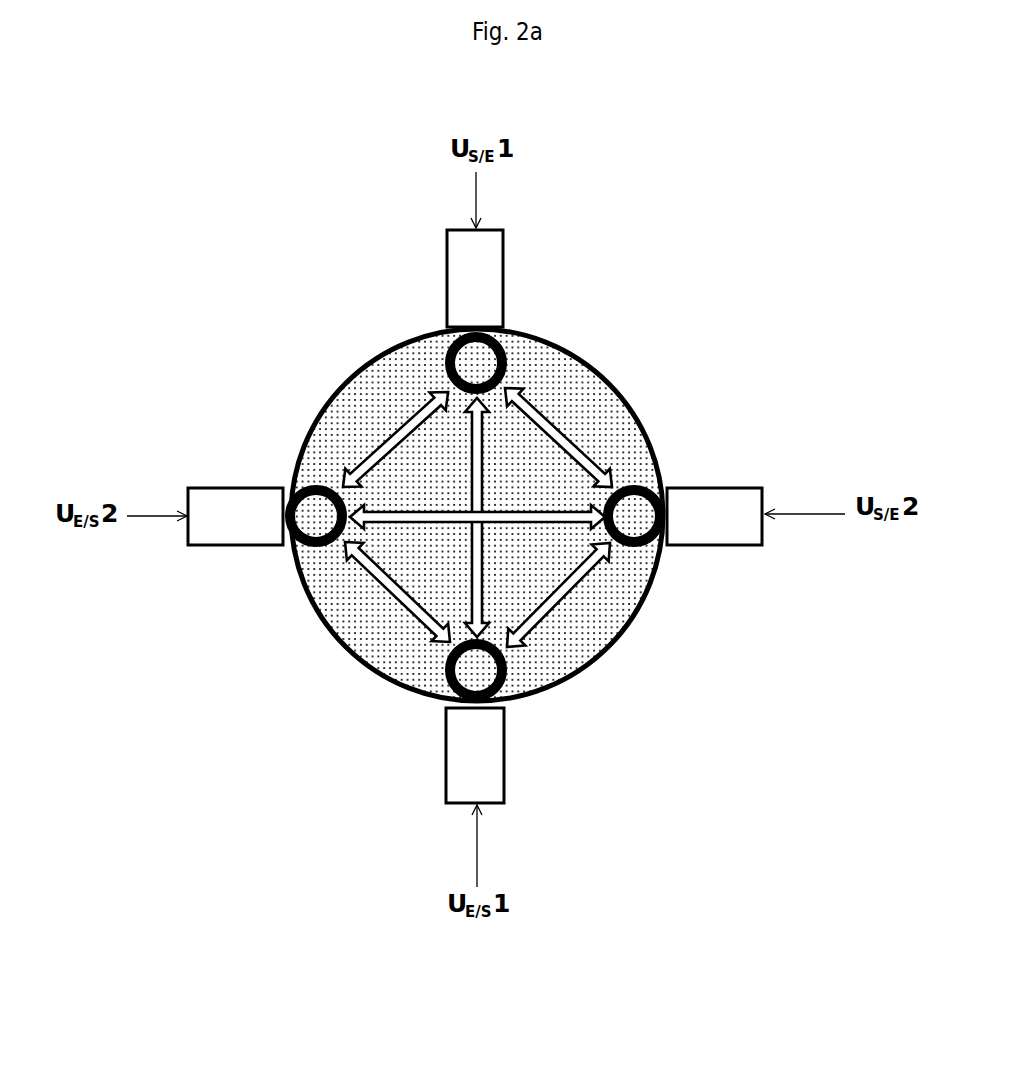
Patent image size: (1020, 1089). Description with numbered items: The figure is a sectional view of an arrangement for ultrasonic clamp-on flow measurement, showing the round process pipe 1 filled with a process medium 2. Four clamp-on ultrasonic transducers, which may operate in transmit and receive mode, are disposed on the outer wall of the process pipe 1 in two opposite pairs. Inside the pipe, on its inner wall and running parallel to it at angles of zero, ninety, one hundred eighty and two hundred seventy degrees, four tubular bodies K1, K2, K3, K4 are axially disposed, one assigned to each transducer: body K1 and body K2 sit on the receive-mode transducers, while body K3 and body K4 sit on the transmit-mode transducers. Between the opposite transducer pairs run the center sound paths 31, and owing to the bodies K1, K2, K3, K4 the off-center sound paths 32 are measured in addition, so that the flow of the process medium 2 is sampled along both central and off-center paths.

The process pipe 1 is at (487, 535).
The process medium 2 is at (603, 415).
The center sound paths 31 is at (485, 488).
The off-center sound paths 32 is at (518, 596).
The body K1 is at (513, 677).
The body K2 is at (312, 563).
The body K3 is at (515, 350).
The body K4 is at (655, 548).